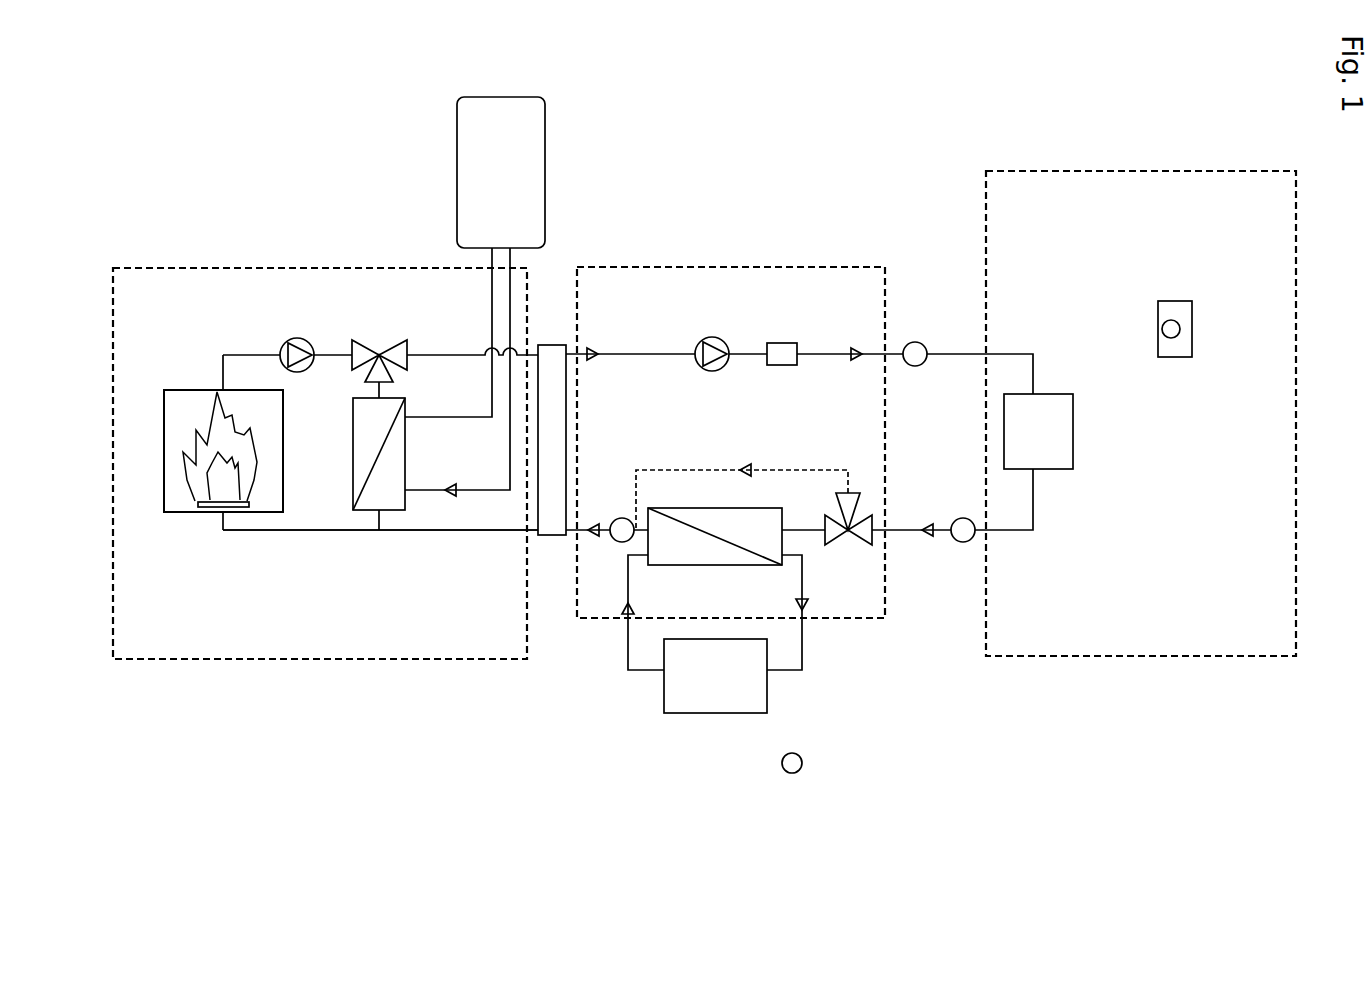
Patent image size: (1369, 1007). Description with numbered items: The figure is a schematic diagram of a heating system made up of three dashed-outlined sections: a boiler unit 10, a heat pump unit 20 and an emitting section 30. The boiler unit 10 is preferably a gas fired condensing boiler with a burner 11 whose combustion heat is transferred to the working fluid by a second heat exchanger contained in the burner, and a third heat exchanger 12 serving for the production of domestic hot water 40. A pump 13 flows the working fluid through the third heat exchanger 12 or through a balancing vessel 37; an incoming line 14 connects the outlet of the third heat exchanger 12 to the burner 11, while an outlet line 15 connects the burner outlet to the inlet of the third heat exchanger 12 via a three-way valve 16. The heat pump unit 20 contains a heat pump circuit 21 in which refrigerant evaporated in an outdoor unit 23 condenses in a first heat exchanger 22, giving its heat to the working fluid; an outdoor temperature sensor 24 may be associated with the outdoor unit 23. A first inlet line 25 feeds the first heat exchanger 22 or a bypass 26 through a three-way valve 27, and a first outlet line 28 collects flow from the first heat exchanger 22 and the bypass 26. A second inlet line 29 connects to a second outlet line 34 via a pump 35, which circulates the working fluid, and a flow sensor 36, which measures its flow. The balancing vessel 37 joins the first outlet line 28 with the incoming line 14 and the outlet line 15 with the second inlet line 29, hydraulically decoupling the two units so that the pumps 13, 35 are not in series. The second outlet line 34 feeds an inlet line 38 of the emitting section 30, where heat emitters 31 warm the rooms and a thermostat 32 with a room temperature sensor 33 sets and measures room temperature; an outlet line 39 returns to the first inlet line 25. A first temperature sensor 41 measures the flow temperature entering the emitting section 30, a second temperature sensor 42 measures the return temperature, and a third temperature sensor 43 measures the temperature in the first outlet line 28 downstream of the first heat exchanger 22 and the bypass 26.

The boiler unit 10 is at (262, 659).
The burner 11 is at (187, 498).
The third heat exchanger 12 is at (370, 500).
The pump 13 is at (293, 338).
The incoming line 14 is at (493, 532).
The outlet line 15 is at (437, 350).
The three-way valve 16 is at (357, 340).
The heat pump unit 20 is at (723, 267).
The heat pump circuit 21 is at (803, 643).
The first heat exchanger 22 is at (685, 517).
The outdoor unit 23 is at (698, 698).
The outdoor temperature sensor 24 is at (798, 766).
The first inlet line 25 is at (902, 535).
The bypass 26 is at (793, 470).
The three-way valve 27 is at (853, 505).
The first outlet line 28 is at (602, 533).
The second inlet line 29 is at (648, 350).
The emitting section 30 is at (1153, 656).
The heat emitters 31 is at (1060, 426).
The thermostat 32 is at (1185, 313).
The temperature sensor 33 is at (1178, 332).
The second outlet line 34 is at (823, 350).
The pump 35 is at (708, 338).
The flow sensor 36 is at (778, 350).
The balancing vessel 37 is at (548, 357).
The inlet line 38 is at (1011, 354).
The outlet line 39 is at (1014, 530).
The domestic hot water 40 is at (533, 147).
The first temperature sensor 41 is at (918, 342).
The second temperature sensor 42 is at (960, 542).
The third temperature sensor 43 is at (626, 521).